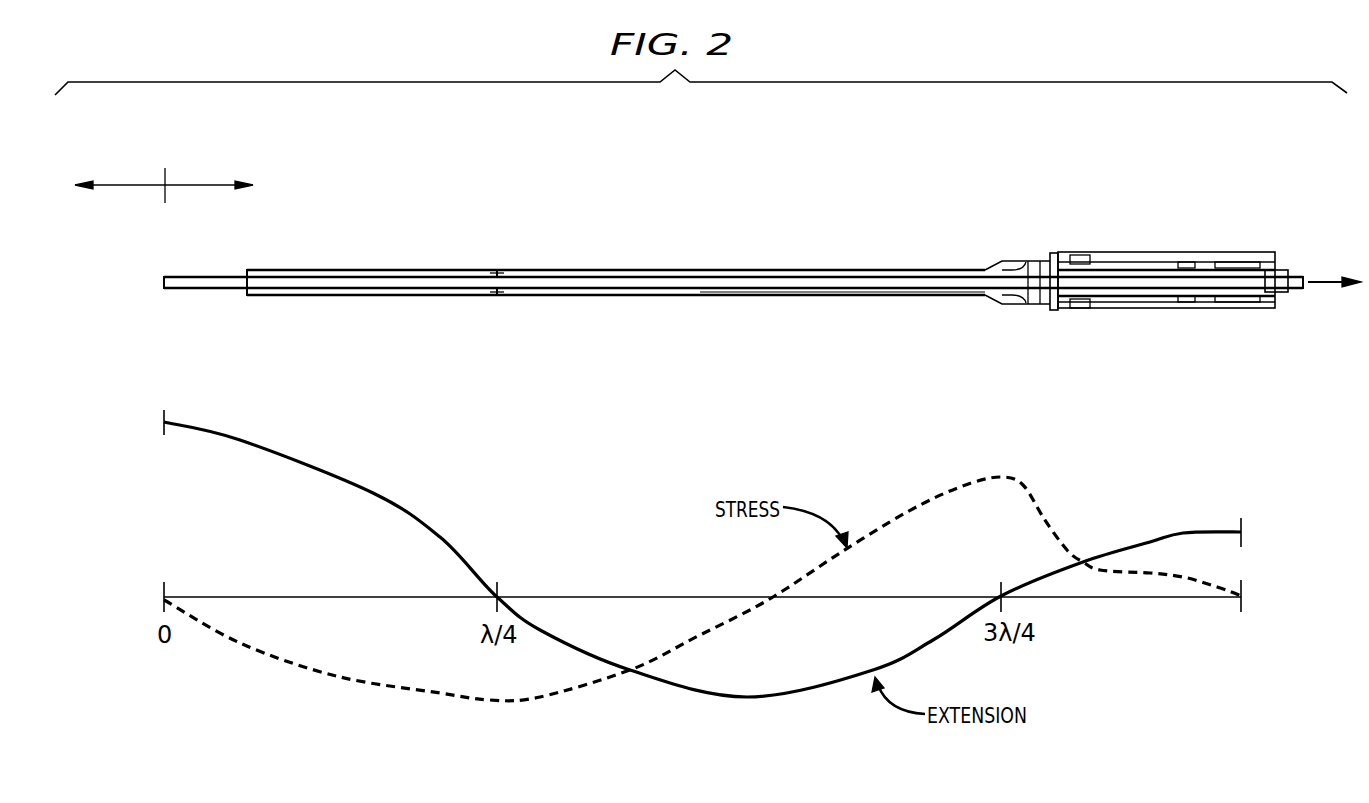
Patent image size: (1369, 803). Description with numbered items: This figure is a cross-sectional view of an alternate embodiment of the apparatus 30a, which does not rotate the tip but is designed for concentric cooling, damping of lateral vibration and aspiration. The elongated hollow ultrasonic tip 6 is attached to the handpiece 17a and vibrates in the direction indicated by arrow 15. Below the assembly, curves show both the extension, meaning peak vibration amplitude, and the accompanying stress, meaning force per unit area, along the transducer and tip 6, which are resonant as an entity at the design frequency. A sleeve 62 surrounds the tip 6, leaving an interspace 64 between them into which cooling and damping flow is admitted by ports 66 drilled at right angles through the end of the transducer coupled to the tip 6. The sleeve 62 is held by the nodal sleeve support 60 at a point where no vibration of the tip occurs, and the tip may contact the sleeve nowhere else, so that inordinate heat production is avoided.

The arrow 15 is at (186, 155).
The ultrasonic tip 6 is at (778, 288).
The interspace 64 is at (703, 270).
The sleeve 62 is at (850, 270).
The nodal sleeve support 60 is at (511, 270).
The apparatus 30a is at (1047, 240).
The ports 66 is at (1046, 308).
The handpiece 17a is at (1273, 247).